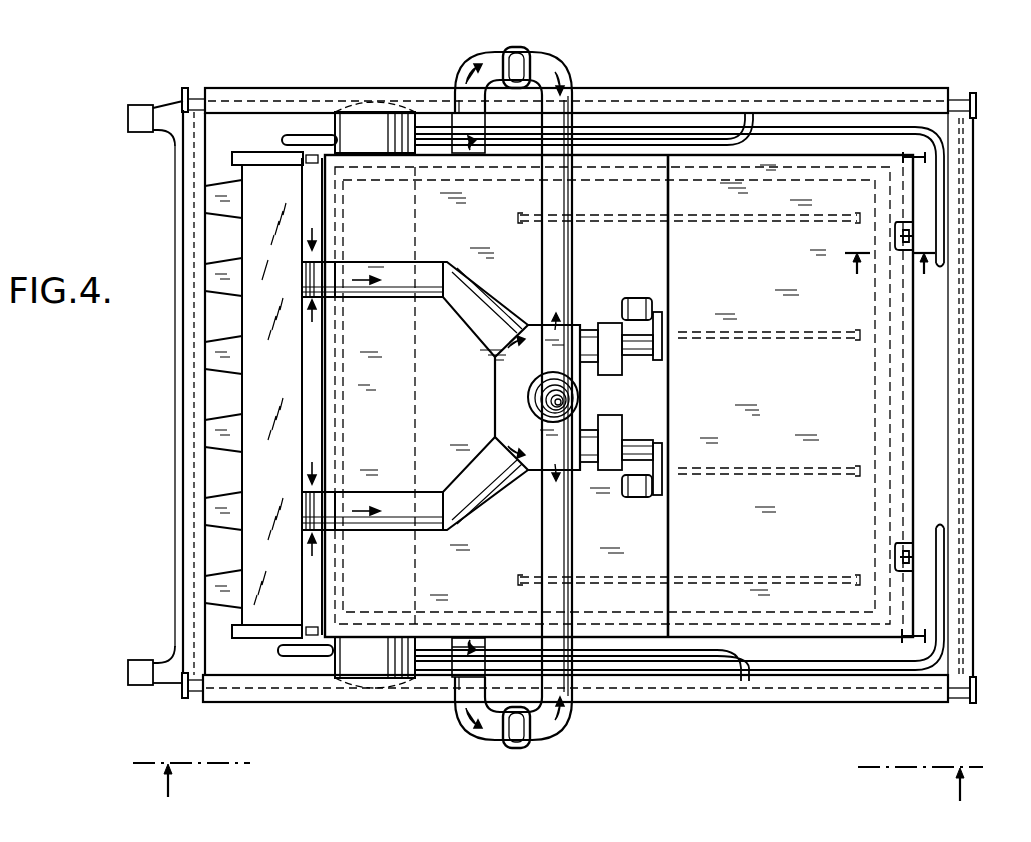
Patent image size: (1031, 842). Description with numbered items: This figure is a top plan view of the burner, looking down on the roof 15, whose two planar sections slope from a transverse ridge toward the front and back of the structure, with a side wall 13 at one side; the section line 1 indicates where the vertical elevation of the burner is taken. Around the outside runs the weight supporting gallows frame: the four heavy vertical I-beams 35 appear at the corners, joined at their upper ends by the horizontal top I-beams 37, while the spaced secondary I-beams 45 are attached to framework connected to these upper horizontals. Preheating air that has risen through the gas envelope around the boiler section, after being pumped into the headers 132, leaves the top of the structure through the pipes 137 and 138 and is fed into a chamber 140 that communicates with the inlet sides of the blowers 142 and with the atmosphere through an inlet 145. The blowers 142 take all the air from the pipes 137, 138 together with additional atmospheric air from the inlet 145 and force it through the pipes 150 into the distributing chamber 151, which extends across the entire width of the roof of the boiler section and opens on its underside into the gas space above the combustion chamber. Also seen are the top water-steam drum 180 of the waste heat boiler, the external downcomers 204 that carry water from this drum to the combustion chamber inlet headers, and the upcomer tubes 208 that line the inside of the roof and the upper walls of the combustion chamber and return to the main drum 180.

The roof 15 is at (822, 192).
The horizontal top I-beams 37 is at (278, 88).
The vertical I-beams 35 is at (977, 103).
The headers 132 is at (128, 120).
The top water-steam drum 180 is at (375, 125).
The pipe 138 is at (480, 62).
The downcomers 204 is at (780, 128).
The pipe 137 is at (380, 262).
The chamber 140 is at (495, 388).
The inlet 145 is at (575, 410).
The blowers 142 is at (606, 323).
The pipes 150 is at (638, 440).
The distributing chamber 151 is at (669, 518).
The upcomer tubes 208 is at (757, 222).
The secondary I-beams 45 is at (913, 235).
The side wall 13 is at (892, 277).
The section line 1 is at (559, 783).